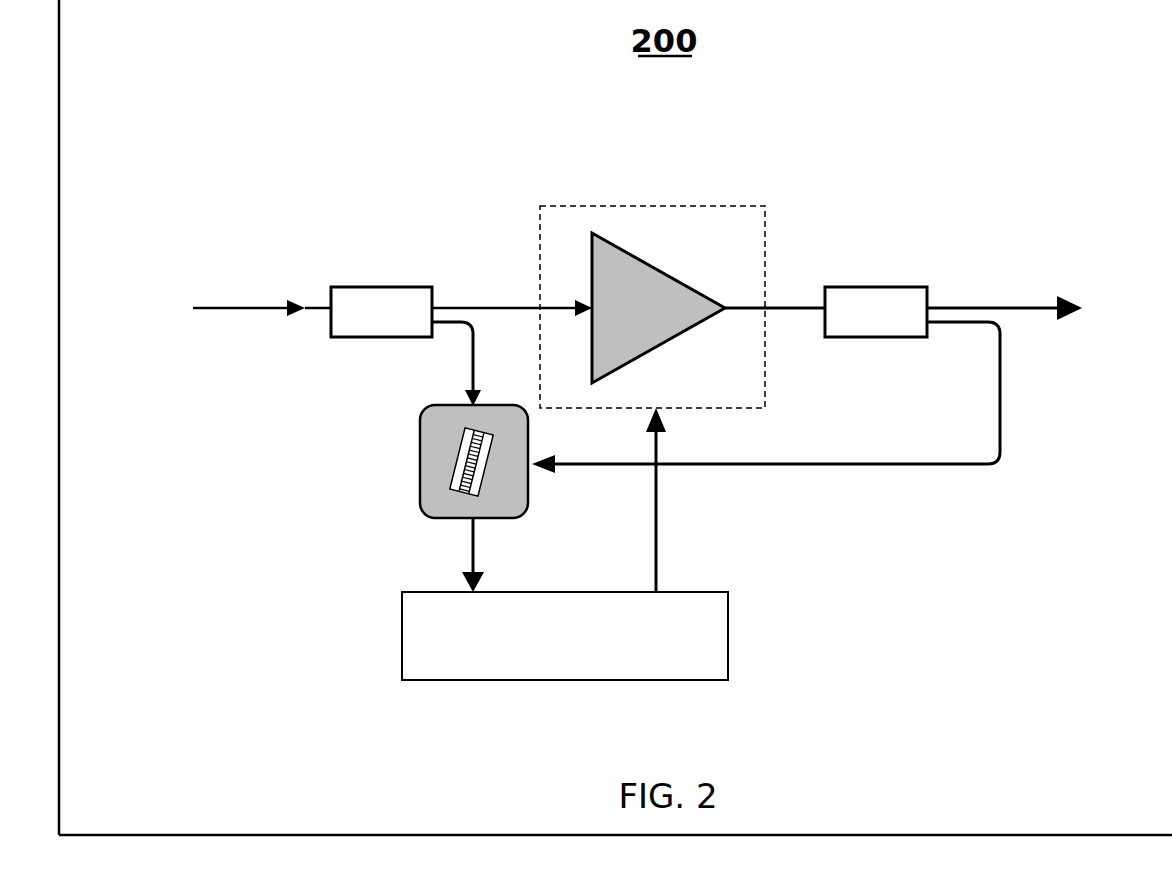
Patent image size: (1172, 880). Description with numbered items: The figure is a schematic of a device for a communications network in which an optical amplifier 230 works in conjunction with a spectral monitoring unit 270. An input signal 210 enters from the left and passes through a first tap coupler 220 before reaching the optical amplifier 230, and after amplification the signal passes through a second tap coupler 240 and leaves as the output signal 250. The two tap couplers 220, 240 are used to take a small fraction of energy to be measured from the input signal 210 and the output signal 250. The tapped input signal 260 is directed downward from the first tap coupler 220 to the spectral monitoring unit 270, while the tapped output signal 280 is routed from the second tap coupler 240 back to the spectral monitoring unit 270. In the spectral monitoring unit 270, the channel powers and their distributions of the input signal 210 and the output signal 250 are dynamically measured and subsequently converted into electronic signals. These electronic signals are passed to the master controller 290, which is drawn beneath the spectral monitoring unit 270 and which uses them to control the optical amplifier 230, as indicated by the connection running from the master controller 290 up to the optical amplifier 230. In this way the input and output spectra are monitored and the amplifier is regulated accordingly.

The input signal 210 is at (233, 306).
The tap coupler 220 is at (362, 297).
The optical amplifier 230 is at (707, 243).
The tap coupler 240 is at (915, 297).
The output signal 250 is at (1013, 307).
The tapped input signal 260 is at (473, 360).
The spectral monitoring unit 270 is at (443, 468).
The tapped output signal 280 is at (818, 468).
The master controller 290 is at (710, 633).